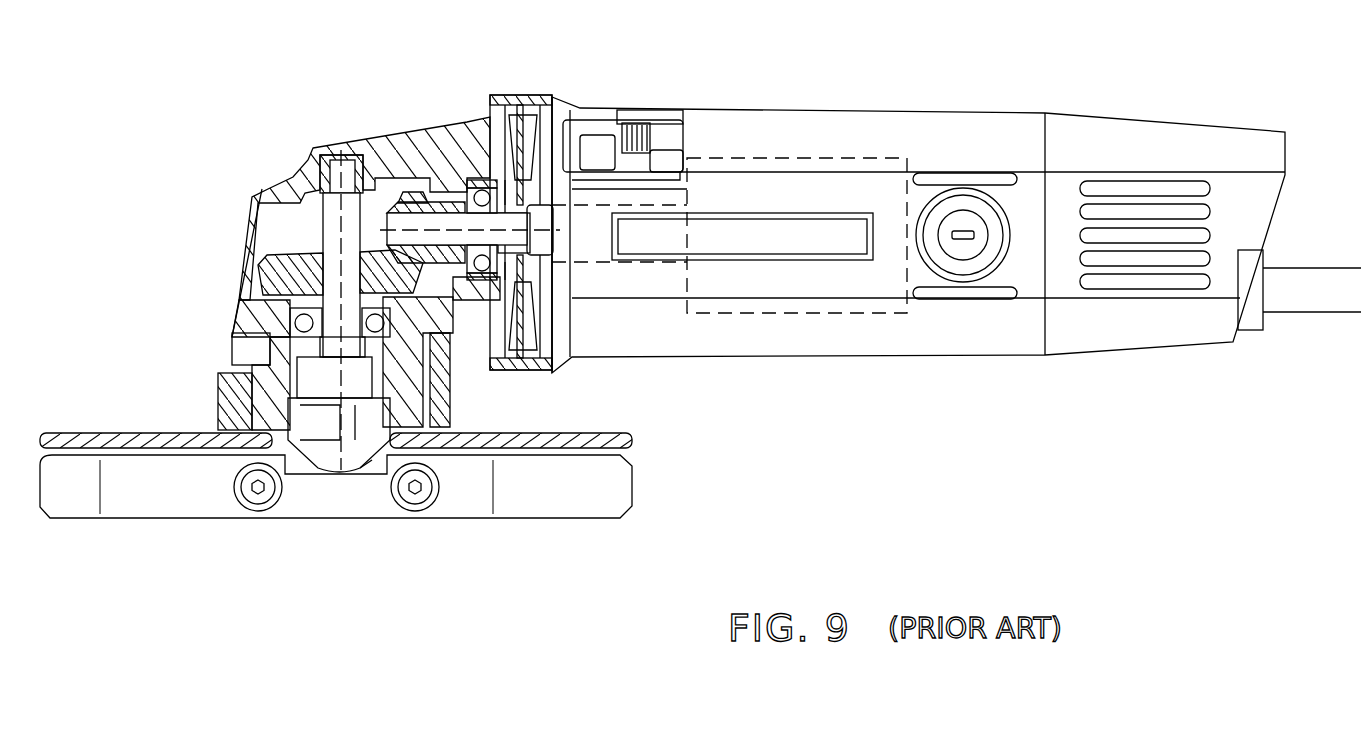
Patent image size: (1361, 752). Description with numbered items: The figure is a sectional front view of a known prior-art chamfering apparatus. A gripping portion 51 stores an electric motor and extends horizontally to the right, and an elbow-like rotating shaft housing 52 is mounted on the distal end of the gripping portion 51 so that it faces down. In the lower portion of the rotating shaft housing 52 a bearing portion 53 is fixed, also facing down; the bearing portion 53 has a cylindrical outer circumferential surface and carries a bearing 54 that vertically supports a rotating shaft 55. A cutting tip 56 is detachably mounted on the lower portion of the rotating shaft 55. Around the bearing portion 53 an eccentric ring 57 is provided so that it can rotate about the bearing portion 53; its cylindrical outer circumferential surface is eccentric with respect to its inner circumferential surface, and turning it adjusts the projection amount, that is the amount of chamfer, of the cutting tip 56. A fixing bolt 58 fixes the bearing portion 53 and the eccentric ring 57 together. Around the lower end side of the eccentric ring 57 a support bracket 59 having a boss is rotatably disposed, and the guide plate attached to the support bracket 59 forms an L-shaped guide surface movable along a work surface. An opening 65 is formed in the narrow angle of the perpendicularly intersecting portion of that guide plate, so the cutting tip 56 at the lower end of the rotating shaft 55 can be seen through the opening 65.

The gripping portion 51 is at (802, 128).
The rotating shaft housing 52 is at (314, 157).
The bearing portion 53 is at (265, 310).
The bearing 54 is at (249, 237).
The rotating shaft 55 is at (332, 217).
The cutting tip 56 is at (355, 450).
The eccentric ring 57 is at (438, 362).
The fixing bolt 58 is at (232, 347).
The support bracket 59 is at (222, 395).
The opening 65 is at (370, 468).